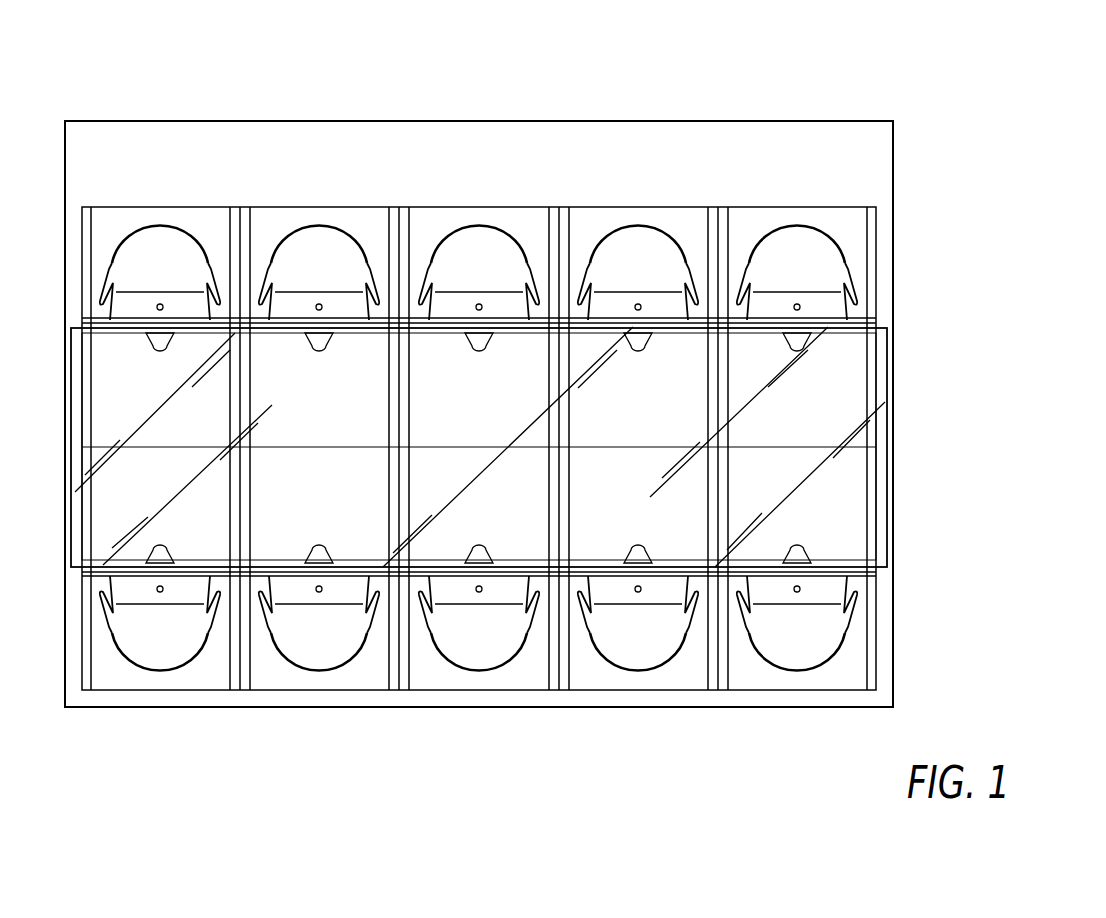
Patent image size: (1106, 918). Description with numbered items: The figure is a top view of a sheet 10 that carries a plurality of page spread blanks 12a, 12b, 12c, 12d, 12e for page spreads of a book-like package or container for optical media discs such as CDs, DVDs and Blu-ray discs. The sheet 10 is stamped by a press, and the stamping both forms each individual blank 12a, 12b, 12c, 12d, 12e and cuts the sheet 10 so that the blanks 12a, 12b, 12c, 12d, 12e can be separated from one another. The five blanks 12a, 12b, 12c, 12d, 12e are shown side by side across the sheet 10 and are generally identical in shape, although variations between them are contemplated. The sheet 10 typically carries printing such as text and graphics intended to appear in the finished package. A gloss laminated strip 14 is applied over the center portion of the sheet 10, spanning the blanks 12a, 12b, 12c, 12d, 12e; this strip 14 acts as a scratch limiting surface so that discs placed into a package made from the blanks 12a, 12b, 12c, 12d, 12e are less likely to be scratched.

The sheet 10 is at (968, 163).
The page spread blank 12a is at (110, 678).
The page spread blank 12b is at (268, 678).
The page spread blank 12c is at (428, 678).
The page spread blank 12d is at (587, 678).
The page spread blank 12e is at (745, 678).
The gloss laminated strip 14 is at (847, 488).